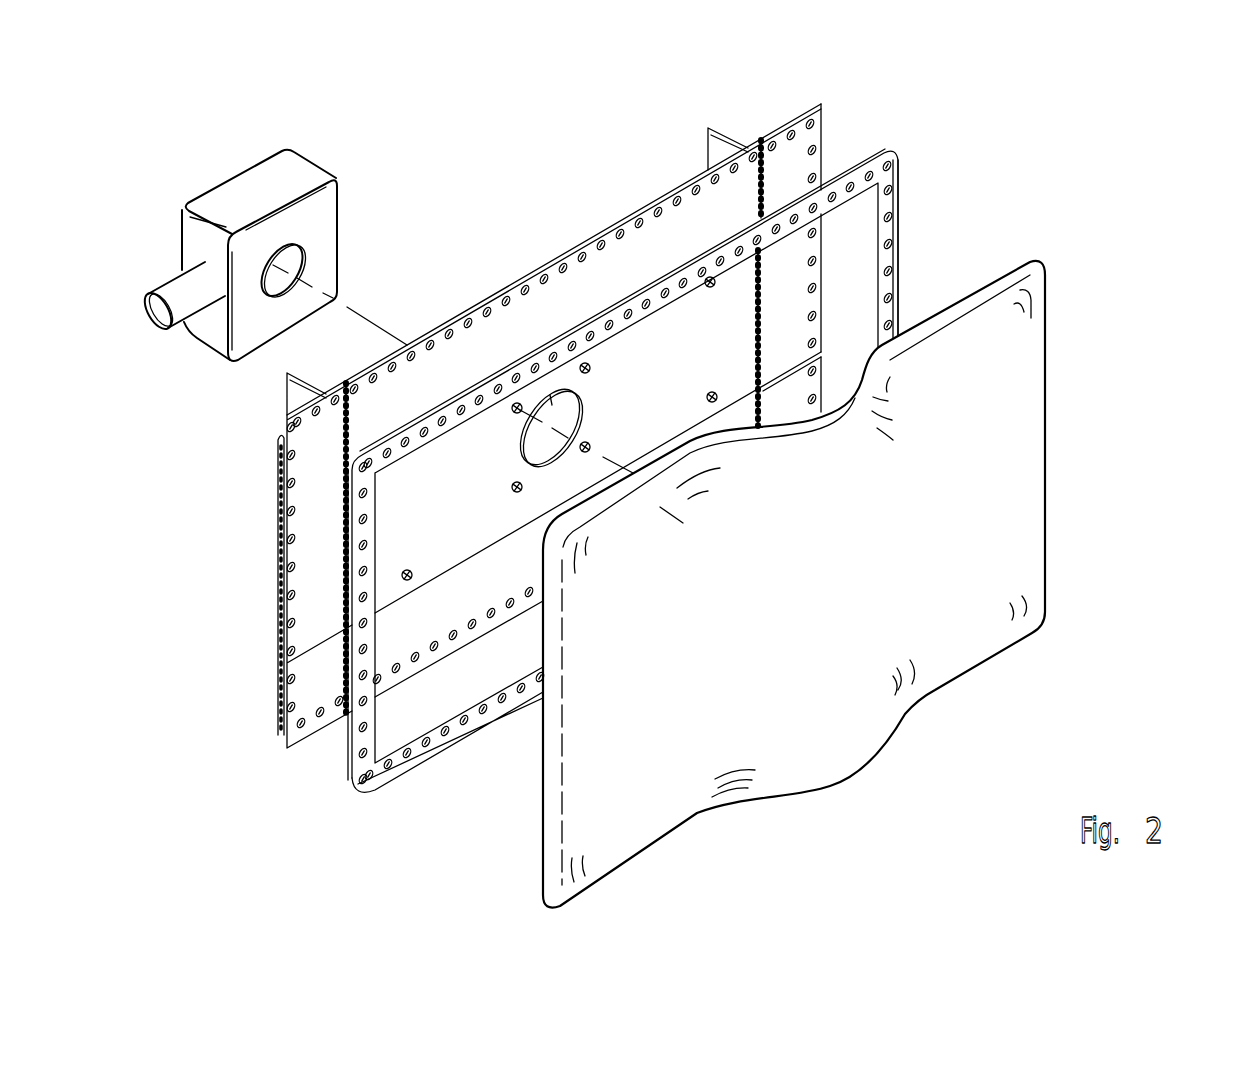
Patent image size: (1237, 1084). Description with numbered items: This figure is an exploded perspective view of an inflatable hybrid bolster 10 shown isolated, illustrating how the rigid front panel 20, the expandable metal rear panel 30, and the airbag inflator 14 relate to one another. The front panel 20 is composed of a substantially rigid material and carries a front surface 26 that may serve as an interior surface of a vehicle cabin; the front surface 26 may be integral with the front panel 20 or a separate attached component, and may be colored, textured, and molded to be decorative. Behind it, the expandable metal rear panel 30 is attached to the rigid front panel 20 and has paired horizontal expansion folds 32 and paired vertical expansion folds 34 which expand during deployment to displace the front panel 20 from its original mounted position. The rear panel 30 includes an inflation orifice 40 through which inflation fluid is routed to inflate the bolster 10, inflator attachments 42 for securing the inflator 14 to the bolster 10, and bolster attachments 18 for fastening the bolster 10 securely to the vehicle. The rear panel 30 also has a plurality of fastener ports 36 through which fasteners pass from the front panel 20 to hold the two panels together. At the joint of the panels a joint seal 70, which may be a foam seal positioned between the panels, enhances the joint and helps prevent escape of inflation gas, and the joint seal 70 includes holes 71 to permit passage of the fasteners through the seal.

The inflatable hybrid bolster 10 is at (1122, 216).
The airbag inflator 14 is at (240, 190).
The bolster attachments 18 is at (707, 392).
The front panel 20 is at (1050, 510).
The front surface 26 is at (1000, 390).
The expandable metal rear panel 30 is at (797, 167).
The horizontal expansion folds 32 is at (797, 213).
The vertical expansion folds 34 is at (725, 130).
The fastener ports 36 is at (813, 267).
The inflation orifice 40 is at (558, 385).
The inflator attachments 42 is at (510, 407).
The joint seal 70 is at (893, 308).
The holes 71 is at (358, 572).